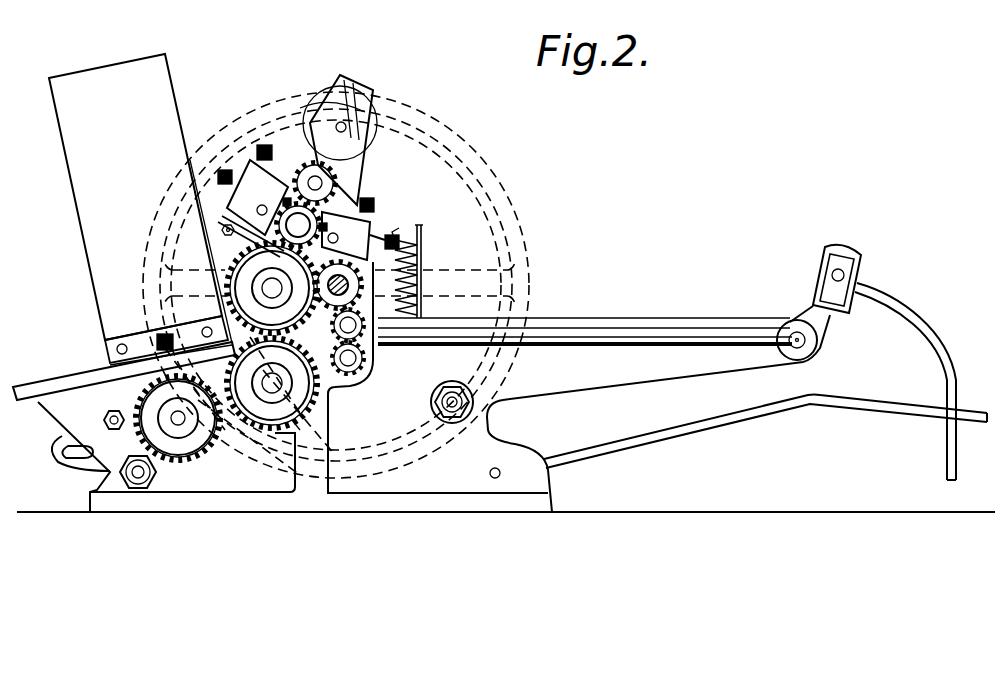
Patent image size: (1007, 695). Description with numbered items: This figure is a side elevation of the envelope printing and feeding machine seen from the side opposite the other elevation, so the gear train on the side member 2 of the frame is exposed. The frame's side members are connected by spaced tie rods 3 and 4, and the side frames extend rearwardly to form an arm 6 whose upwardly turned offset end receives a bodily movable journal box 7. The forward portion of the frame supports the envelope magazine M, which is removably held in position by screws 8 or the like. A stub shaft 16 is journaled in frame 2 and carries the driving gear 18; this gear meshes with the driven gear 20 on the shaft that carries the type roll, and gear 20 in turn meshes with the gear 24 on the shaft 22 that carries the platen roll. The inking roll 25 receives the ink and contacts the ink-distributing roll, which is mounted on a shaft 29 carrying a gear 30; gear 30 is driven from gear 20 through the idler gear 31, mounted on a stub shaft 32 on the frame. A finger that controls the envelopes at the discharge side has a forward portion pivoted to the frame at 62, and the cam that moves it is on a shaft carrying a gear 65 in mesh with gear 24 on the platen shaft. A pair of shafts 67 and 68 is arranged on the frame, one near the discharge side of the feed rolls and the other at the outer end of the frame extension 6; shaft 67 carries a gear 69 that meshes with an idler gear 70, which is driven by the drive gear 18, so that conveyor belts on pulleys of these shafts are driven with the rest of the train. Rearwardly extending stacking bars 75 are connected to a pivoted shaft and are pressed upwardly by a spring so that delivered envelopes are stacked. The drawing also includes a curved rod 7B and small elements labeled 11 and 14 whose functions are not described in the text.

The envelope magazine M is at (100, 276).
The side member 2 is at (425, 488).
The tie rod 3 is at (452, 400).
The tie rod 4 is at (150, 473).
The arm 6 is at (705, 370).
The journal box 7 is at (842, 262).
The rod 7B is at (943, 340).
The screw 8 is at (150, 336).
The pinion 11 is at (346, 332).
The shaft 14 is at (272, 288).
The stub shaft 16 is at (310, 300).
The driving gear 18 is at (332, 296).
The driven gear 20 is at (279, 227).
The shaft 22 is at (272, 383).
The gear 24 is at (304, 434).
The inking roll 25 is at (330, 150).
The shaft 29 is at (314, 181).
The gear 30 is at (343, 170).
The idler gear 31 is at (359, 215).
The stub shaft 32 is at (280, 197).
The pivot 62 is at (107, 413).
The gear 65 is at (212, 450).
The shaft 67 is at (355, 366).
The shaft 68 is at (795, 338).
The gear 69 is at (348, 366).
The idler gear 70 is at (400, 345).
The stacking bar 75 is at (741, 418).